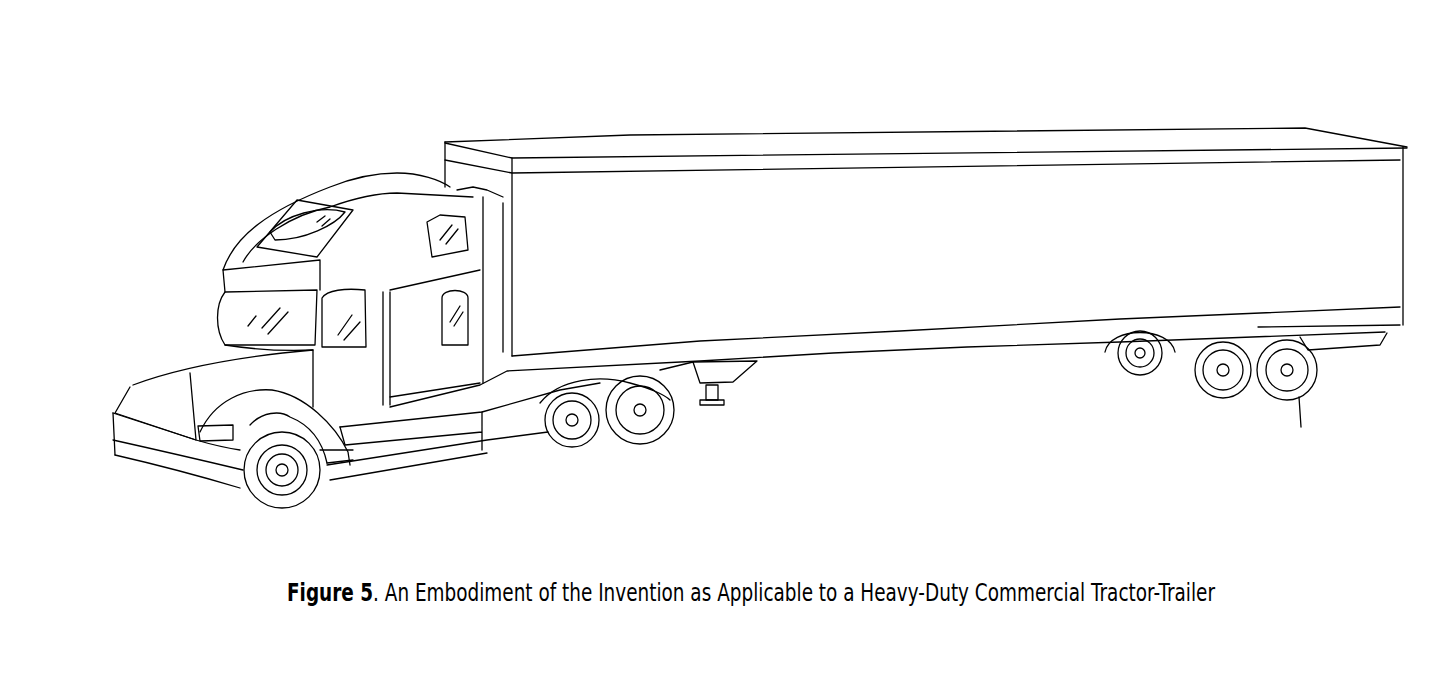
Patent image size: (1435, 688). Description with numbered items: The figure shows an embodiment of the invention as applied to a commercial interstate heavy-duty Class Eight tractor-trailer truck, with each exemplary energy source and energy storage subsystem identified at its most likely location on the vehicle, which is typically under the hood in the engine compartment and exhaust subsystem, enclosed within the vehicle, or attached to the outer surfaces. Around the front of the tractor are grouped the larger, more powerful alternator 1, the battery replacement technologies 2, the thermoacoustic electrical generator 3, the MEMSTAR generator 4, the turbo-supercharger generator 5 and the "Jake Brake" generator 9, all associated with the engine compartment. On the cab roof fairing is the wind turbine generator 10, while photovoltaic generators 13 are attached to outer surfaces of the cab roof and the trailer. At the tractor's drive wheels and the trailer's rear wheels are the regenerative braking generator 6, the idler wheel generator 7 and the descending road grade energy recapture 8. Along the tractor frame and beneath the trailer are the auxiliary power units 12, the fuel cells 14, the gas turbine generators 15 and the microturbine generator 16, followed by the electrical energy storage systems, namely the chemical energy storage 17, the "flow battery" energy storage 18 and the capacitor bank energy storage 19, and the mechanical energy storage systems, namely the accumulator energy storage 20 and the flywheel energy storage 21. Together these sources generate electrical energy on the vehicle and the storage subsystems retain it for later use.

The larger, more powerful alternator 1 is at (160, 372).
The battery replacement technologies 2 is at (165, 375).
The thermoacoustic electrical generator 3 is at (183, 371).
The MEMSTAR generator 4 is at (205, 368).
The turbo-supercharger generator 5 is at (210, 362).
The regenerative braking generator 6 is at (638, 420).
The idler wheel generator 7 is at (592, 387).
The descending road grade energy recapture 8 is at (640, 423).
The "Jake Brake" generator 9 is at (225, 363).
The wind turbine generator 10 is at (447, 172).
The auxiliary power unit 12 is at (487, 360).
The photovoltaic generator 13 is at (320, 203).
The fuel cell 14 is at (498, 380).
The gas turbine generator 15 is at (880, 350).
The microturbine generator 16 is at (914, 350).
The chemical energy storage 17 is at (964, 348).
The "flow battery" energy storage 18 is at (983, 348).
The capacitor bank energy storage 19 is at (1015, 350).
The accumulator energy storage 20 is at (1063, 342).
The flywheel energy storage 21 is at (1098, 342).